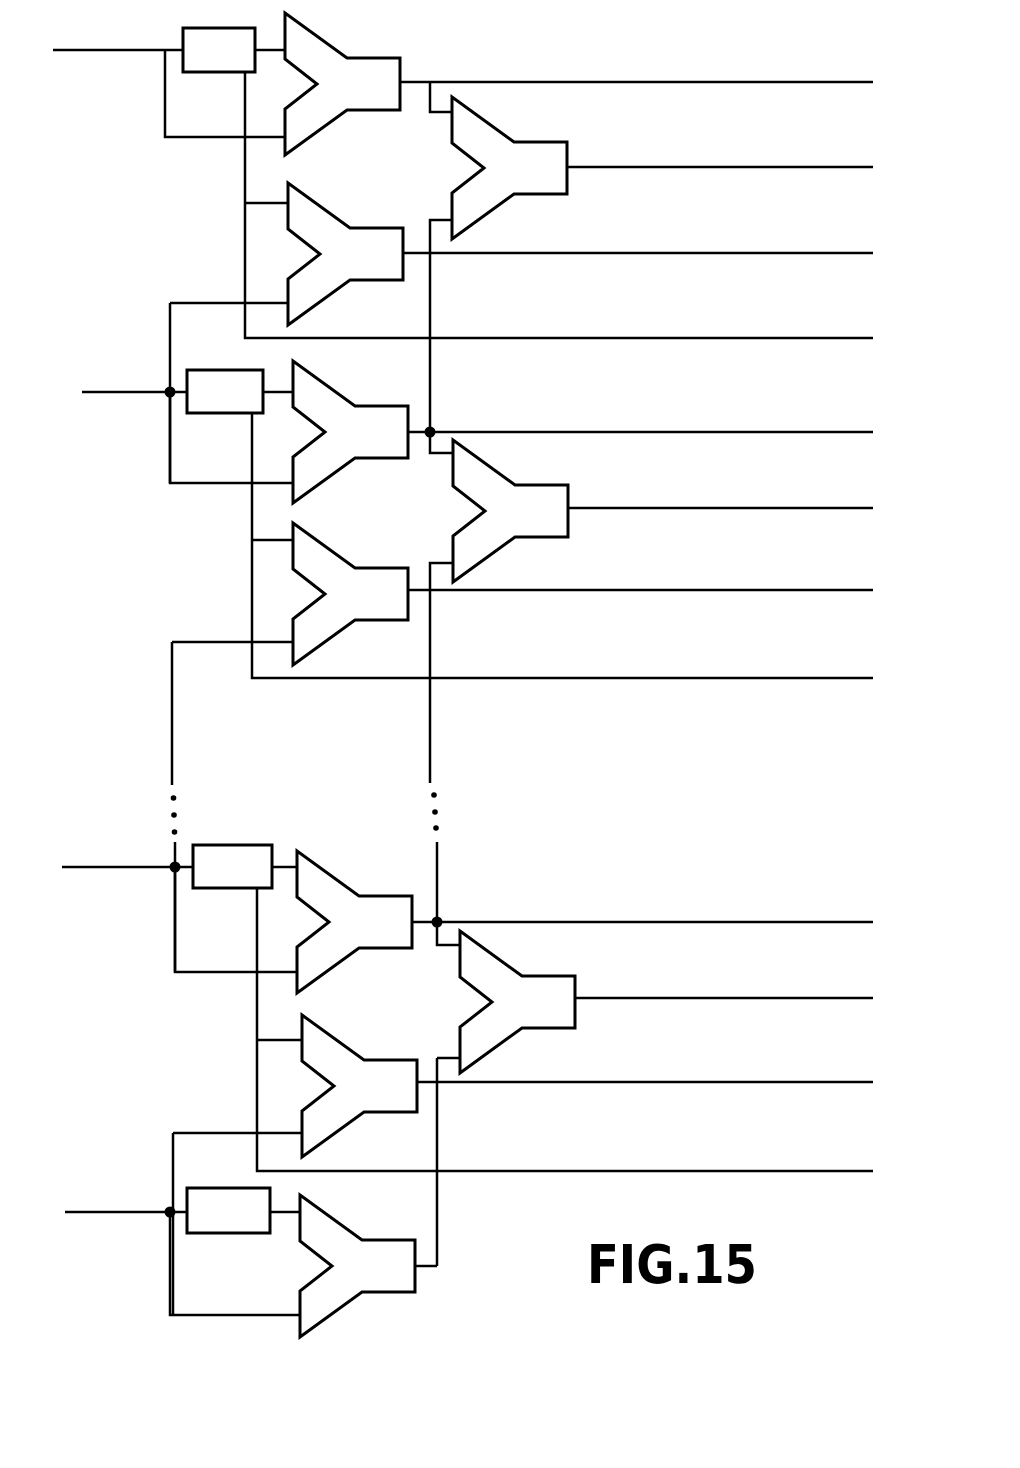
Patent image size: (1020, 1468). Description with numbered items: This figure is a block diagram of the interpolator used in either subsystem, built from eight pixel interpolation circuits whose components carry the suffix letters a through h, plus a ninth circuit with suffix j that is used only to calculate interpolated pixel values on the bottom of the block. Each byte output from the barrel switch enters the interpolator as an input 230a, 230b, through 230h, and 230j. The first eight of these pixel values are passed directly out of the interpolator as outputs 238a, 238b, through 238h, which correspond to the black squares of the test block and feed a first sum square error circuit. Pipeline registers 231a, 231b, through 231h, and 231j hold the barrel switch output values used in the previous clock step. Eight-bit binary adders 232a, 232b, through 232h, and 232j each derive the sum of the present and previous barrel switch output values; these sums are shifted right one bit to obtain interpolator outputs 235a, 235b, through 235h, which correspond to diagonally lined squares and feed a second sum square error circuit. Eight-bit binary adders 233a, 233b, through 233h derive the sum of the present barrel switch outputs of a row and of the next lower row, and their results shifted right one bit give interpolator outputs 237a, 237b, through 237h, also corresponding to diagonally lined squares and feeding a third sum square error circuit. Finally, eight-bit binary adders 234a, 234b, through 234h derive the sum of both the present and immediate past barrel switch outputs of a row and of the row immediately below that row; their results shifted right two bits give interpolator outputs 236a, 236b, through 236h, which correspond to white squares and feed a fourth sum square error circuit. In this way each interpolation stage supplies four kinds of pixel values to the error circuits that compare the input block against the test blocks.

The interpolator input 230a is at (169, 77).
The pipeline register 231a is at (234, 50).
The eight-bit binary adder 232a is at (342, 84).
The eight-bit binary adder 233a is at (286, 333).
The eight-bit binary adder 234a is at (509, 168).
The interpolator output 235a is at (636, 80).
The interpolator output 236a is at (720, 166).
The interpolator output 237a is at (638, 322).
The interpolator output 238a is at (559, 205).
The interpolator input 230b is at (187, 420).
The pipeline register 231b is at (240, 391).
The eight-bit binary adder 232b is at (350, 432).
The eight-bit binary adder 233b is at (289, 747).
The eight-bit binary adder 234b is at (510, 511).
The interpolator output 235b is at (640, 430).
The interpolator output 236b is at (720, 510).
The interpolator output 237b is at (640, 738).
The interpolator output 238b is at (562, 545).
The interpolator input 230h is at (179, 902).
The pipeline register 231h is at (245, 866).
The eight-bit binary adder 232h is at (354, 922).
The eight-bit binary adder 233h is at (295, 1165).
The eight-bit binary adder 234h is at (517, 1002).
The interpolator output 235h is at (642, 919).
The interpolator output 236h is at (724, 997).
The interpolator output 237h is at (645, 1157).
The interpolator output 238h is at (565, 1029).
The interpolator input 230j is at (182, 1245).
The pipeline register 231j is at (243, 1210).
The eight-bit binary adder 232j is at (368, 1266).